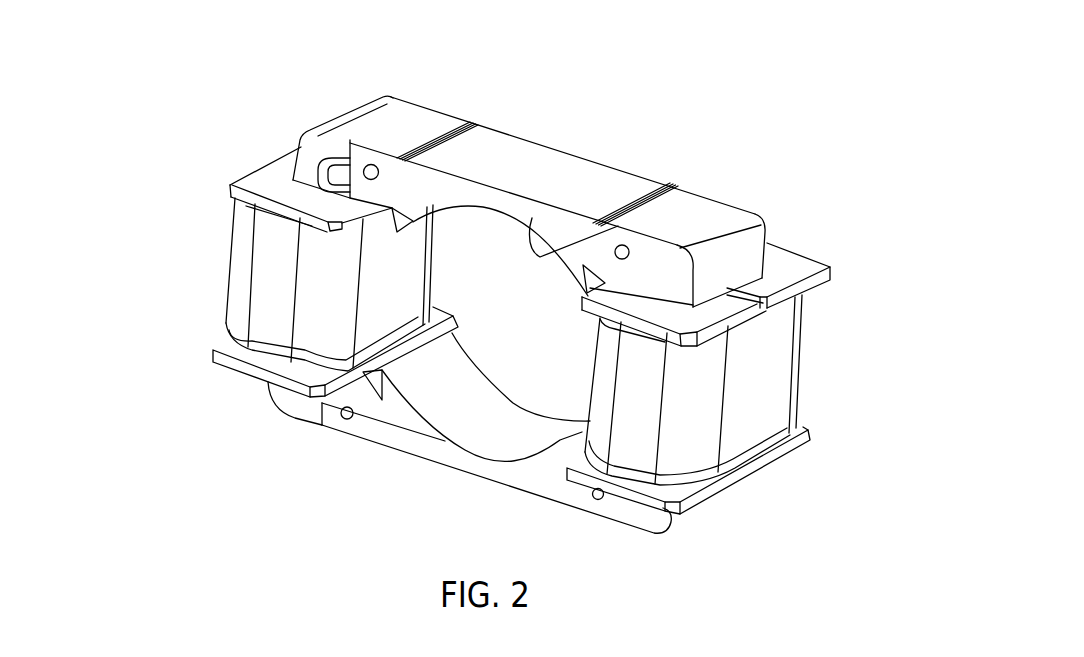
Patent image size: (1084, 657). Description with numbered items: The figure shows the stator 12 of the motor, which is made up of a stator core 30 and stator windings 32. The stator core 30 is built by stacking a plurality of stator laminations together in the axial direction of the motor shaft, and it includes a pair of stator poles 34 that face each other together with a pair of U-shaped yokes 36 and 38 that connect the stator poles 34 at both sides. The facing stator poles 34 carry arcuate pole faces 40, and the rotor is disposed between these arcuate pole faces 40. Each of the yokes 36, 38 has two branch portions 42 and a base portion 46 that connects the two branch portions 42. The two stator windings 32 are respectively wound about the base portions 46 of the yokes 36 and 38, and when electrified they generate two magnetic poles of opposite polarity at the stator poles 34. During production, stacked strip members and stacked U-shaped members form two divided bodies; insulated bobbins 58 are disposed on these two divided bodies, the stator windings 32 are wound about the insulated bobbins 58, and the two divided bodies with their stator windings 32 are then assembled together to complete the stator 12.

The stator 12 is at (752, 122).
The stator core 30 is at (585, 178).
The stator windings 32 is at (272, 273).
The stator poles 34 is at (513, 205).
The U-shaped yoke 36 is at (314, 98).
The U-shaped yoke 38 is at (788, 200).
The arcuate pole faces 40 is at (583, 270).
The branch portions 42 is at (392, 155).
The base portion 46 is at (314, 186).
The insulated bobbins 58 is at (792, 262).